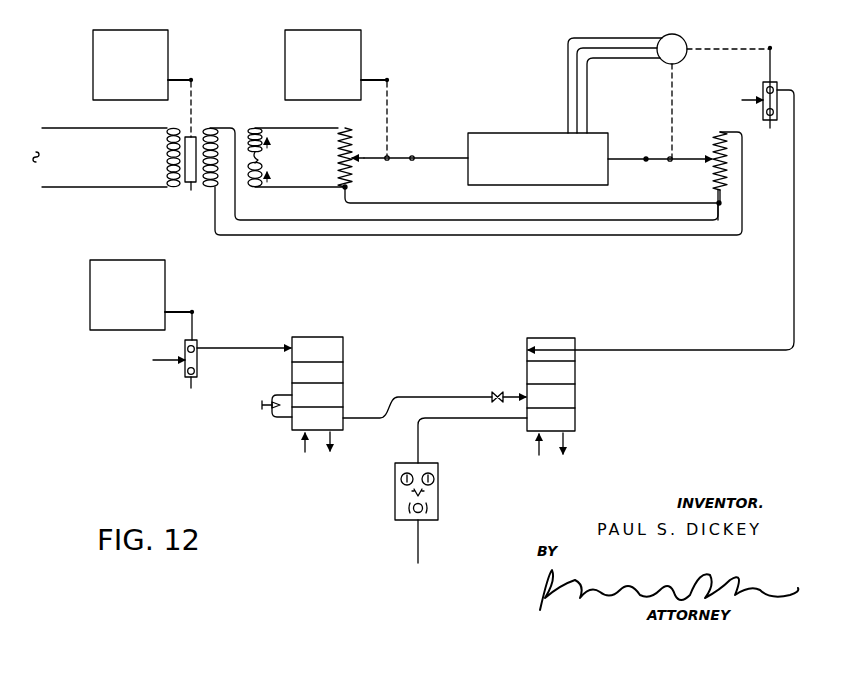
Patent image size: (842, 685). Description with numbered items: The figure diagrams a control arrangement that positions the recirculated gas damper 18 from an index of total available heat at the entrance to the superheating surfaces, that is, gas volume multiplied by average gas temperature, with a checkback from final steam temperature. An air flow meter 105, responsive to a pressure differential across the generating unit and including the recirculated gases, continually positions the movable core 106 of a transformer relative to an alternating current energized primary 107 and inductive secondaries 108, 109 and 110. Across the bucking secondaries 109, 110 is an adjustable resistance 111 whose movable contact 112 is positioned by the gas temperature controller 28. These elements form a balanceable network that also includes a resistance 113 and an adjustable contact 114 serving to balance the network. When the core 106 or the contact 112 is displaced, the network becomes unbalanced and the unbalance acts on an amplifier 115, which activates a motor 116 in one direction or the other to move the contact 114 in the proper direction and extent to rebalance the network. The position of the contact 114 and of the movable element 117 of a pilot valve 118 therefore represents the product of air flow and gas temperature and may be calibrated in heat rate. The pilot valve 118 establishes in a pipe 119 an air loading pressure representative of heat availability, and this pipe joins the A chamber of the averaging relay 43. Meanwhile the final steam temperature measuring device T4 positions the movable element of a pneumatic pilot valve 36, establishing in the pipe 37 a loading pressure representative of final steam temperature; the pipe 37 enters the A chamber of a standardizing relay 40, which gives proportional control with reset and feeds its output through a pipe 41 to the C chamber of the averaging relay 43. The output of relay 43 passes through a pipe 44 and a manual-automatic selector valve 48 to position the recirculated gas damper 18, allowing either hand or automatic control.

The air flow meter 105 is at (168, 38).
The gas temperature controller 28 is at (361, 38).
The primary 107 is at (165, 148).
The movable core 106 is at (190, 190).
The inductive secondary 108 is at (213, 190).
The bucking secondary 109 is at (258, 128).
The bucking secondary 110 is at (262, 158).
The adjustable resistance 111 is at (354, 150).
The movable contact 112 is at (374, 160).
The amplifier 115 is at (498, 133).
The motor 116 is at (661, 62).
The resistance 113 is at (713, 138).
The adjustable contact 114 is at (666, 163).
The movable element 117 is at (773, 65).
The pilot valve 118 is at (763, 85).
The pipe 119 is at (794, 290).
The final steam temperature measuring device T4 is at (165, 277).
The pneumatic pilot valve 36 is at (183, 375).
The pipe 37 is at (233, 347).
The standardizing relay 40 is at (335, 337).
The pipe 41 is at (410, 397).
The pipe 44 is at (465, 420).
The averaging relay 43 is at (568, 338).
The manual-automatic selector valve 48 is at (440, 494).
The recirculated gas damper 18 is at (418, 599).